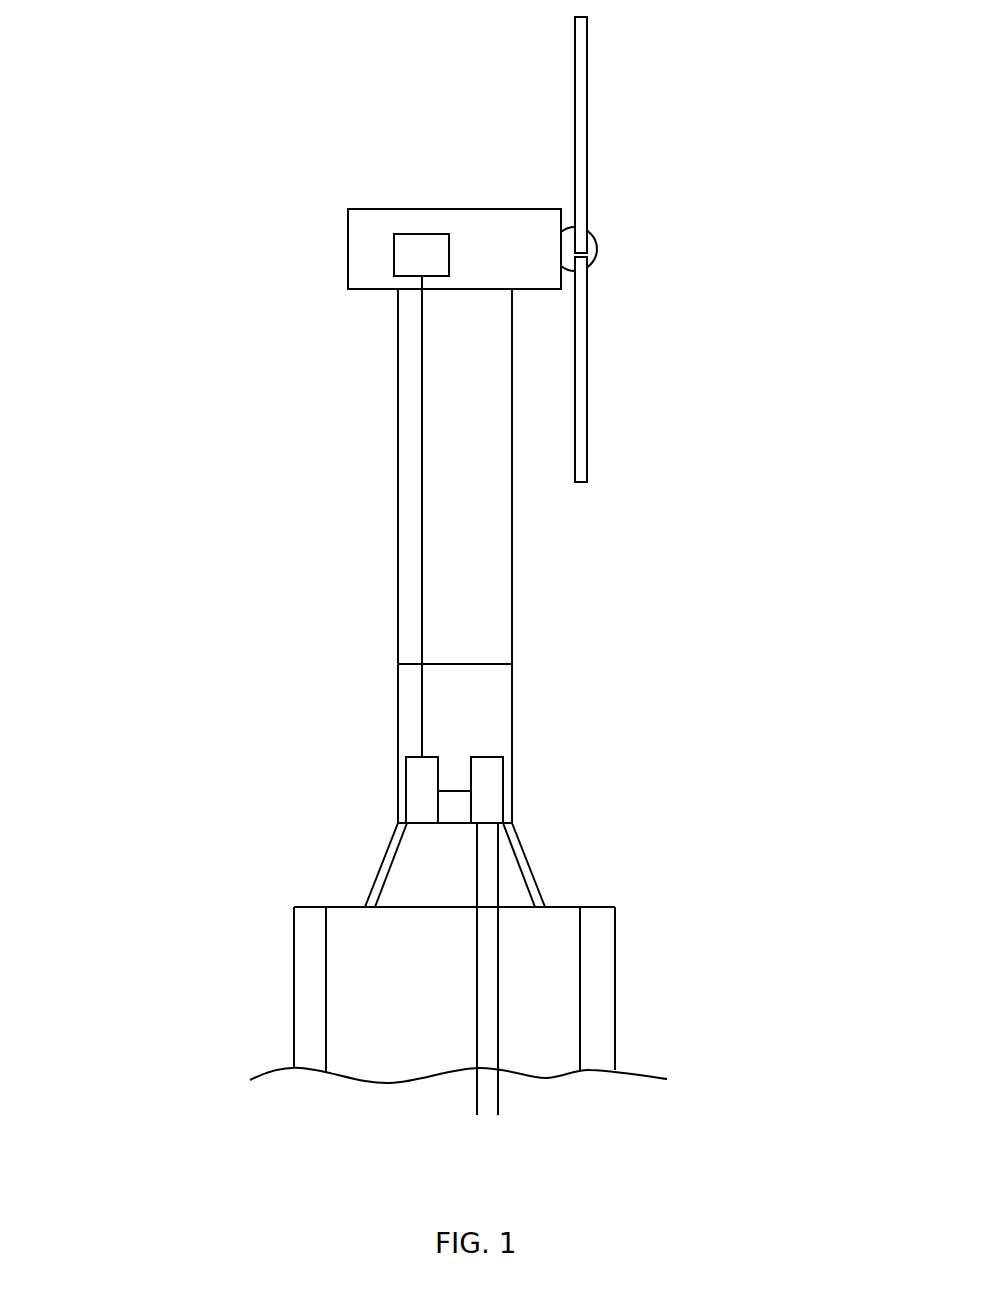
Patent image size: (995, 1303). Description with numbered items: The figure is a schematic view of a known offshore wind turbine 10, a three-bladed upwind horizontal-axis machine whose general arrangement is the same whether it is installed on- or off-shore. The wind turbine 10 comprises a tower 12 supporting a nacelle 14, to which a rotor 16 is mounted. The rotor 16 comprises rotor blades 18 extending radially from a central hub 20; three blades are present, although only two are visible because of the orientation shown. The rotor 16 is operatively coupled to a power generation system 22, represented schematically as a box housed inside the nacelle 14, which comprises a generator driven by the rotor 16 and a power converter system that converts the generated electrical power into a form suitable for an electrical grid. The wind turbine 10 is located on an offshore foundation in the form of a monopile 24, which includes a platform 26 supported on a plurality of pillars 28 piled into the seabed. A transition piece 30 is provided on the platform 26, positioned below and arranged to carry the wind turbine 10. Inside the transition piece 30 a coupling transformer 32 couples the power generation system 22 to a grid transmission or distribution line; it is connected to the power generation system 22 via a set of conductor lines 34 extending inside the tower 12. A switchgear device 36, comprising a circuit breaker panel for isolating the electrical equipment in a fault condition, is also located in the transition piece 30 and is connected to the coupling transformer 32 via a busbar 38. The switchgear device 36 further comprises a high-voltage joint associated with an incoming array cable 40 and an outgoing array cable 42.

The wind turbine 10 is at (143, 391).
The tower 12 is at (513, 580).
The nacelle 14 is at (348, 243).
The rotor 16 is at (752, 205).
The rotor blades 18 is at (582, 100).
The central hub 20 is at (590, 248).
The power generation system 22 is at (421, 255).
The monopile 24 is at (143, 949).
The platform 26 is at (328, 907).
The pillars 28 is at (305, 1012).
The transition piece 30 is at (560, 788).
The coupling transformer 32 is at (412, 757).
The set of conductor lines 34 is at (422, 450).
The switchgear device 36 is at (487, 757).
The busbar 38 is at (448, 788).
The incoming array cable 40 is at (475, 1097).
The outgoing array cable 42 is at (498, 1012).